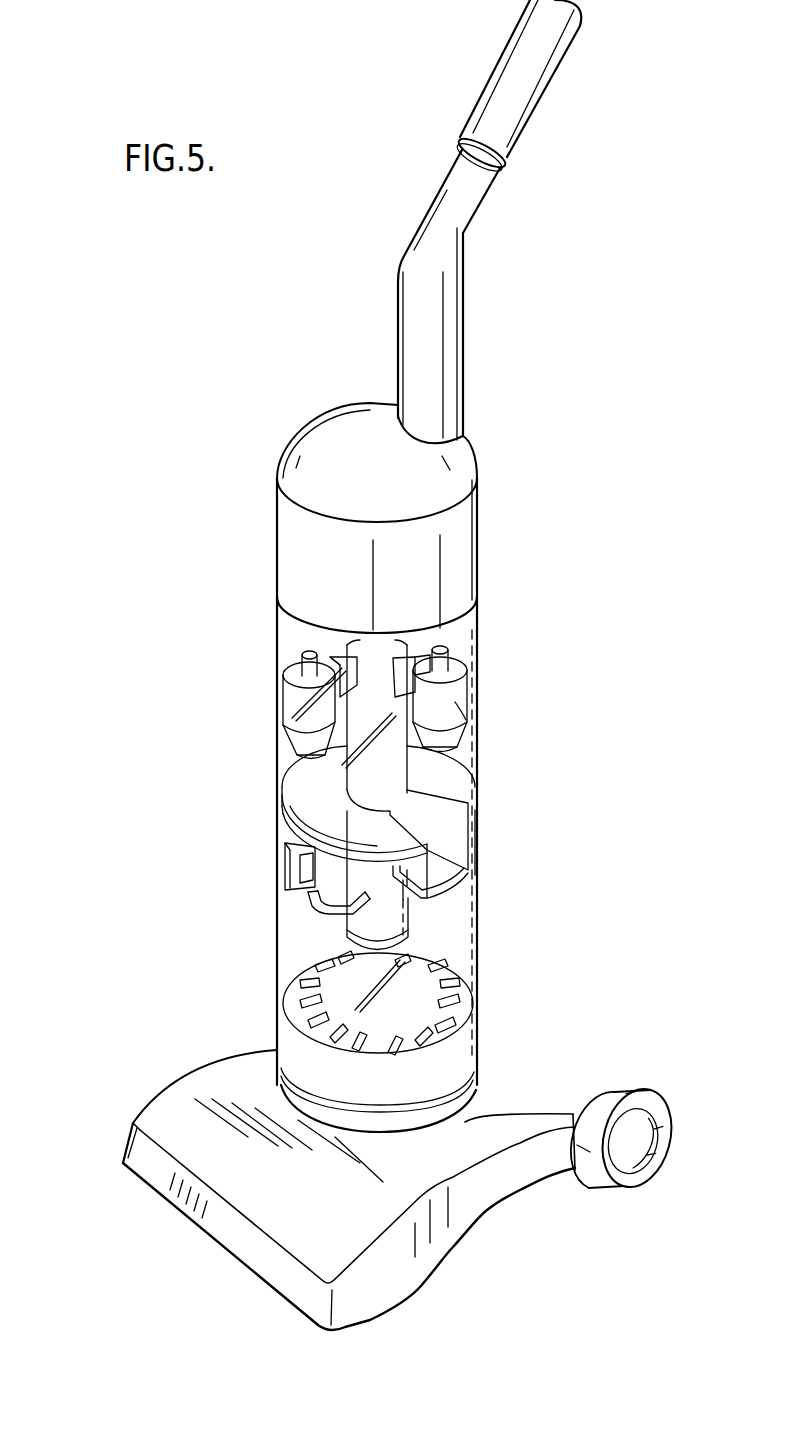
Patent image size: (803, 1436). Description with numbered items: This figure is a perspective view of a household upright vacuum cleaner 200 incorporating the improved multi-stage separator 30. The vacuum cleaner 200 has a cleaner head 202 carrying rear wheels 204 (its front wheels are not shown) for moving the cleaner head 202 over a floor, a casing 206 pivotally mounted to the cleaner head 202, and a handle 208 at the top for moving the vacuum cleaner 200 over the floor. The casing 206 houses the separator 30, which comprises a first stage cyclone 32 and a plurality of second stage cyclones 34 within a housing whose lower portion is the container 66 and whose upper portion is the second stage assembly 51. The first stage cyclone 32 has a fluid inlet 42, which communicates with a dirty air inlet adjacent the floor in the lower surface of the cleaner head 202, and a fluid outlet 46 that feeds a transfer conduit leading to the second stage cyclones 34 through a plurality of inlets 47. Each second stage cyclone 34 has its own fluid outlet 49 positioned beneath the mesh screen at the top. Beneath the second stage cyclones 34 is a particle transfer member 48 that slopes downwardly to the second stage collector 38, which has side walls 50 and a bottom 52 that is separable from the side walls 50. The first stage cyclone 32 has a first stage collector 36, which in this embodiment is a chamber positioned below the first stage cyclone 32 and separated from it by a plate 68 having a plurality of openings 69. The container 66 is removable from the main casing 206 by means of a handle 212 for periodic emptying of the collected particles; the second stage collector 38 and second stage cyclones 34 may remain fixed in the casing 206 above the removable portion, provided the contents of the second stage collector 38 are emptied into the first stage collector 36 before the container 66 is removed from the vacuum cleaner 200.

The upright vacuum cleaner 200 is at (570, 378).
The cleaner head 202 is at (152, 1088).
The rear wheels 204 is at (625, 1097).
The casing 206 is at (292, 532).
The handle 208 is at (557, 50).
The multi-stage separator 30 is at (215, 598).
The first stage cyclone 32 is at (290, 948).
The second stage cyclones 34 is at (453, 713).
The first stage collector 36 is at (470, 1040).
The second stage collector 38 is at (445, 894).
The fluid inlet 42 is at (286, 872).
The fluid outlet 46 is at (400, 922).
The inlets 47 is at (420, 641).
The particle transfer member 48 is at (322, 802).
The fluid outlet 49 is at (449, 666).
The side walls 50 is at (470, 830).
The second stage assembly 51 is at (478, 642).
The bottom 52 is at (453, 898).
The container 66 is at (480, 952).
The plate 68 is at (293, 990).
The openings 69 is at (470, 974).
The handle 212 is at (318, 905).